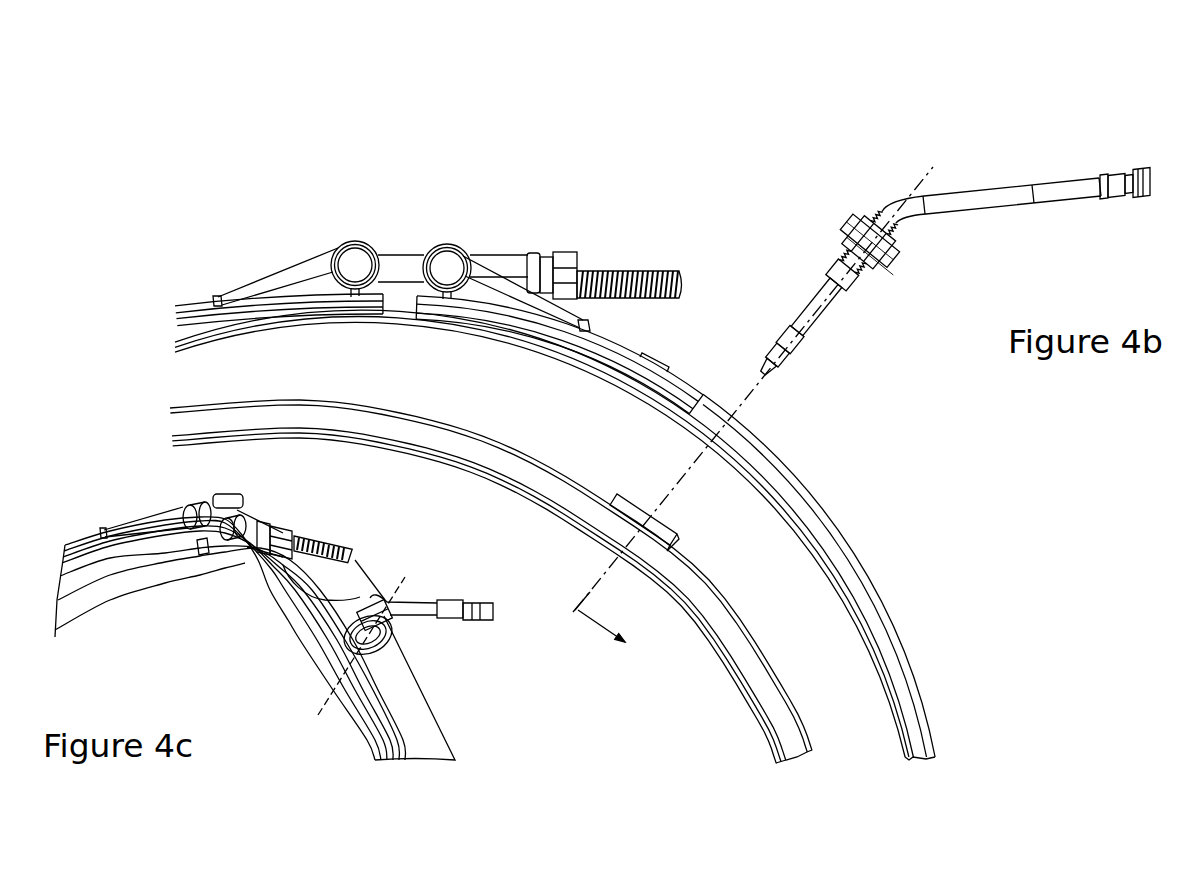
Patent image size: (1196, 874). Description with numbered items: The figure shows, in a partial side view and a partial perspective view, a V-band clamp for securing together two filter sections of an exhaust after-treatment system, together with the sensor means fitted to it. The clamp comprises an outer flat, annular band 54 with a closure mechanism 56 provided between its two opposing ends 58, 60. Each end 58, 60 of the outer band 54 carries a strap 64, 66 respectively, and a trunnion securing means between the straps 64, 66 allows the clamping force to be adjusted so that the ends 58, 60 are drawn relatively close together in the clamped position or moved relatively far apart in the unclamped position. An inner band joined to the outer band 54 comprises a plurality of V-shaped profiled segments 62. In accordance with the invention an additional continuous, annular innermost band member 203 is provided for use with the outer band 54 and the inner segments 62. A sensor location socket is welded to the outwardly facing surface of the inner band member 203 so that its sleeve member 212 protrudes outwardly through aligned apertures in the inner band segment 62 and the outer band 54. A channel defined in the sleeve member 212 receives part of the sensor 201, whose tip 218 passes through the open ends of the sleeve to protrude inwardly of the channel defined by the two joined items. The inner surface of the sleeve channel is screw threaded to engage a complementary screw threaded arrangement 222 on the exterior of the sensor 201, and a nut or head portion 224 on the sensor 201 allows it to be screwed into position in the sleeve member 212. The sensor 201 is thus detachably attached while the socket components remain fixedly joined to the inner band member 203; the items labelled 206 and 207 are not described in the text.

In FIG. 4B, the outer annular band 54 is at (682, 370).
In FIG. 4C, the outer annular band 54 is at (408, 712).
In FIG. 4B, the closure mechanism 56 is at (447, 223).
In FIG. 4C, the closure mechanism 56 is at (293, 503).
In FIG. 4B, the first end of outer band 58 is at (336, 236).
In FIG. 4B, the second end of outer band 60 is at (423, 238).
In FIG. 4B, the V-shaped profiled segments 62 is at (885, 664).
In FIG. 4B, the strap 64 is at (357, 243).
In FIG. 4B, the strap 66 is at (461, 246).
In FIG. 4B, the sensor 201 is at (955, 257).
In FIG. 4B, the inner band member 203 is at (557, 492).
In FIG. 4C, the inner band member 203 is at (283, 618).
In FIG. 4B, the probe axis 206 is at (705, 393).
In FIG. 4C, the sensor cable 207 is at (430, 594).
In FIG. 4B, the sleeve member 212 is at (626, 494).
In FIG. 4B, the tip of sensor 218 is at (778, 383).
In FIG. 4C, the tip of sensor 218 is at (333, 692).
In FIG. 4B, the screw threaded arrangement 222 is at (870, 280).
In FIG. 4B, the nut or head portion 224 is at (897, 258).
In FIG. 4C, the nut or head portion 224 is at (378, 600).